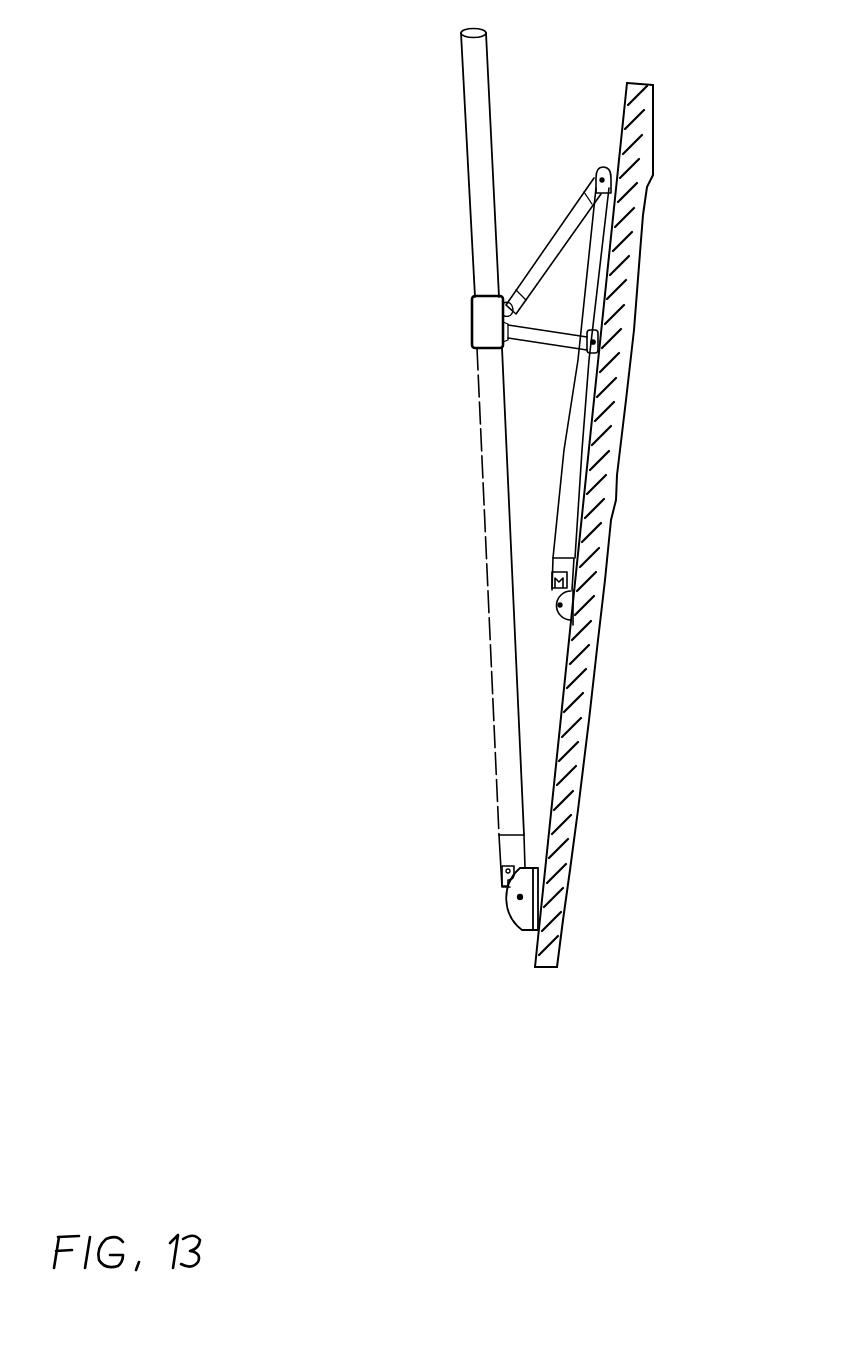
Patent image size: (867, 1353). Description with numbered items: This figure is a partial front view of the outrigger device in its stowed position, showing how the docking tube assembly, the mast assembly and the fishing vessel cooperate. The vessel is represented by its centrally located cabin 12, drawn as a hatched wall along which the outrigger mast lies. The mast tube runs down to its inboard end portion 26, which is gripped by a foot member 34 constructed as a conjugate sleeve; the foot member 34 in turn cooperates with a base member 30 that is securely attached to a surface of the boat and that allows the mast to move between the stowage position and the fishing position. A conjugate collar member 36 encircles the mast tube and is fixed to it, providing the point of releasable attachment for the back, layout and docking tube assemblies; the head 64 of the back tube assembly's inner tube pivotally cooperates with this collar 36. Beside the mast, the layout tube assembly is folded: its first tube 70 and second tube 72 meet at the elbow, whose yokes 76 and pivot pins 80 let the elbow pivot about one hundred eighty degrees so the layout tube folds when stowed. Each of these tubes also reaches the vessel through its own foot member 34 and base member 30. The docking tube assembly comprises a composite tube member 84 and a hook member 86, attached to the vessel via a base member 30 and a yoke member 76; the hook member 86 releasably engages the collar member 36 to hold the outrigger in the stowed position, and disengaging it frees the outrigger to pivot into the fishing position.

The cabin 12 is at (650, 109).
The inboard end portion 26 is at (487, 547).
The base member 30 is at (598, 333).
The foot member 34 is at (508, 848).
The collar member 36 is at (472, 296).
The head 64 is at (500, 296).
The first tube 70 is at (617, 230).
The second tube 72 is at (550, 237).
The yoke 76 is at (603, 167).
The pivot pin 80 is at (591, 190).
The composite tube member 84 is at (533, 343).
The hook member 86 is at (503, 352).